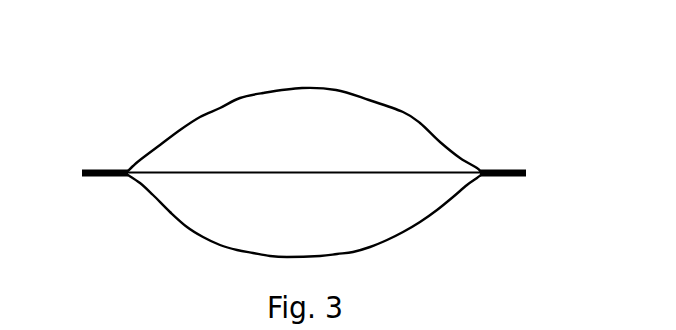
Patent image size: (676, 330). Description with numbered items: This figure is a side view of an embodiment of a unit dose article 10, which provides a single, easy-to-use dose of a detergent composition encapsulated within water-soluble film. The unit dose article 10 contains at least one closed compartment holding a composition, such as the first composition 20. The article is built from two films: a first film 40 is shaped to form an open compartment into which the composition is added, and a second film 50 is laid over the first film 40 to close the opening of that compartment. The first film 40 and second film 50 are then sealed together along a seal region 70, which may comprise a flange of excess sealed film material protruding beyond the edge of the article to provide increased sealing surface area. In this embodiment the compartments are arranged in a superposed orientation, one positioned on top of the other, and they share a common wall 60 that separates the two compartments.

The unit dose article 10 is at (470, 67).
The first composition 20 is at (243, 163).
The first film 40 is at (393, 240).
The second film 50 is at (323, 89).
The common wall 60 is at (414, 175).
The seal region 70 is at (110, 170).